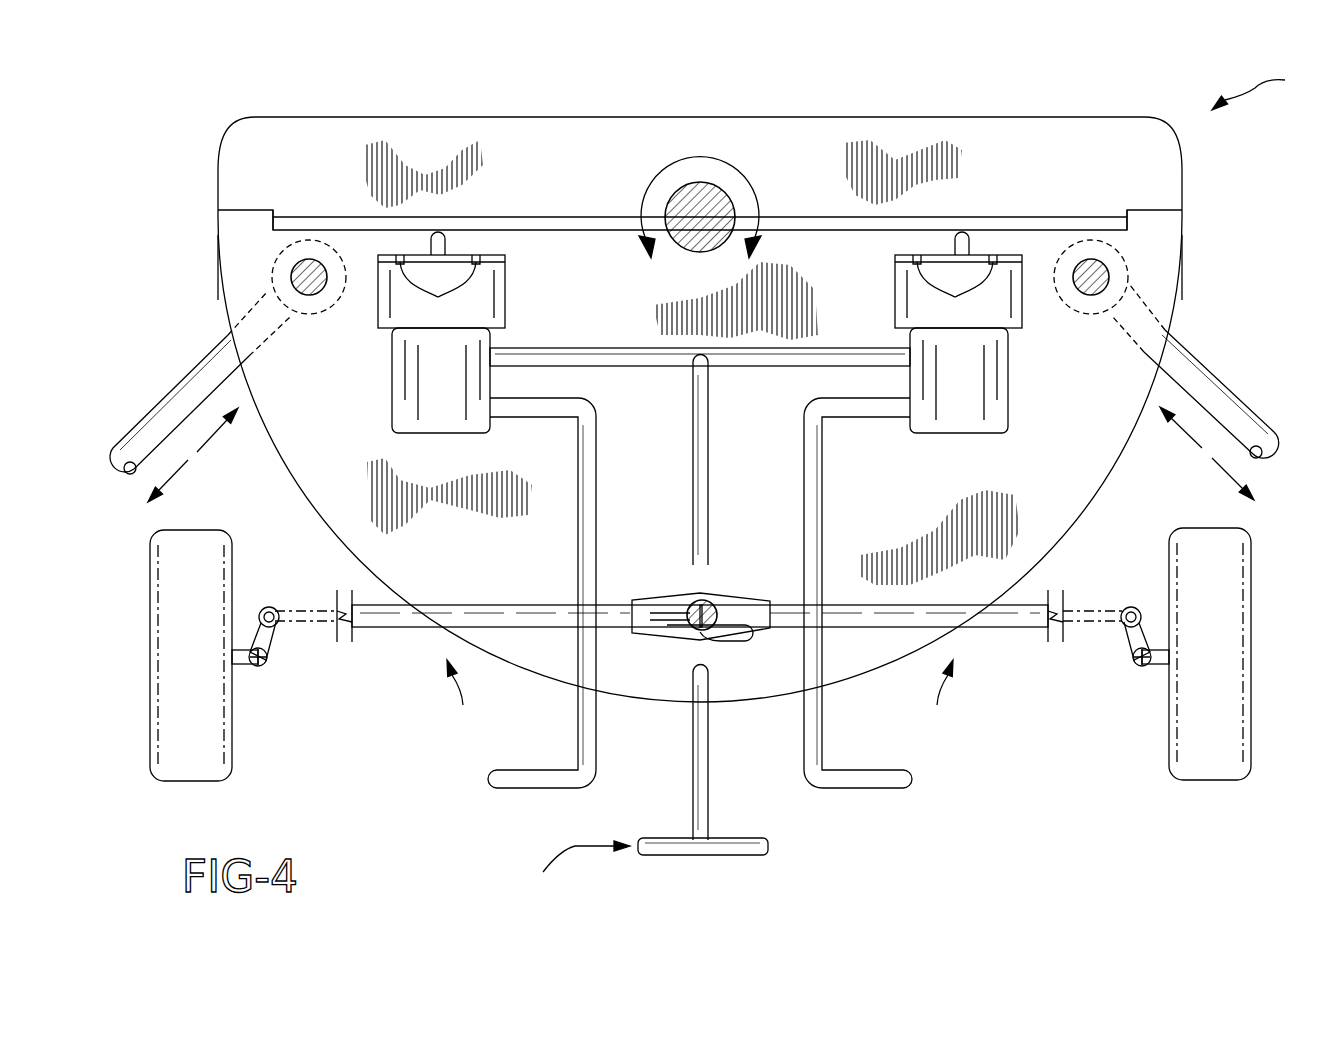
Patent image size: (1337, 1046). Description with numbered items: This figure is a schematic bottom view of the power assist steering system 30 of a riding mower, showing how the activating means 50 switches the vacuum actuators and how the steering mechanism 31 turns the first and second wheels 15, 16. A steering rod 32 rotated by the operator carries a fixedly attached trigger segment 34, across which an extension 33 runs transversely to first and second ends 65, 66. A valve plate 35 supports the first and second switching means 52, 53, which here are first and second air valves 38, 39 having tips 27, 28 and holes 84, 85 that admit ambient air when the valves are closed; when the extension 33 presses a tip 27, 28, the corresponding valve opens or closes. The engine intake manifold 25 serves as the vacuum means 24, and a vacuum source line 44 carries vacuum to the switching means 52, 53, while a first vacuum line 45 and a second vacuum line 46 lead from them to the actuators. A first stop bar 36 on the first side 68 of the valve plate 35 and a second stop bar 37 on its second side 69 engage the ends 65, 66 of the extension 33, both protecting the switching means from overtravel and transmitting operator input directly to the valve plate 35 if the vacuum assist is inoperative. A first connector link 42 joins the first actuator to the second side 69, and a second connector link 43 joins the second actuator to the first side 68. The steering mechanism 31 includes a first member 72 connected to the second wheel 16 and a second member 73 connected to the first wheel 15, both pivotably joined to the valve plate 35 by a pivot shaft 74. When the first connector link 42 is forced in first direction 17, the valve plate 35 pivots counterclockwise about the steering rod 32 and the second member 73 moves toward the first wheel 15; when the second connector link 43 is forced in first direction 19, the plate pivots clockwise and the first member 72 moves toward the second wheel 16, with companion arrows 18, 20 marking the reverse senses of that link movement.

The first wheel 15 is at (1207, 696).
The second wheel 16 is at (199, 697).
The first direction 17 is at (1190, 447).
The arrow direction 18 is at (1222, 465).
The first direction 19 is at (210, 447).
The arrow direction 20 is at (180, 465).
The vacuum means 24 is at (569, 863).
The intake manifold 25 is at (746, 840).
The tip 27 is at (442, 241).
The tip 28 is at (958, 241).
The power assist steering system 30 is at (1265, 88).
The steering mechanism 31 is at (701, 700).
The steering rod 32 is at (705, 238).
The extension 33 is at (1005, 222).
The trigger segment 34 is at (811, 136).
The valve plate 35 is at (430, 561).
The first stop bar 36 is at (300, 279).
The second stop bar 37 is at (1100, 279).
The first air valve 38 is at (420, 412).
The second air valve 39 is at (978, 412).
The first connector link 42 is at (1247, 428).
The second connector link 43 is at (153, 428).
The vacuum source line 44 is at (702, 398).
The first vacuum line 45 is at (596, 468).
The second vacuum line 46 is at (806, 468).
The activating means 50 is at (535, 97).
The first switching means 52 is at (401, 344).
The second switching means 53 is at (1001, 344).
The first end 65 is at (294, 232).
The second end 66 is at (1105, 232).
The first side 68 is at (238, 245).
The second side 69 is at (1163, 248).
The first member 72 is at (395, 617).
The second member 73 is at (1006, 617).
The pivot shaft 74 is at (695, 610).
The hole 84 is at (441, 291).
The hole 85 is at (958, 291).